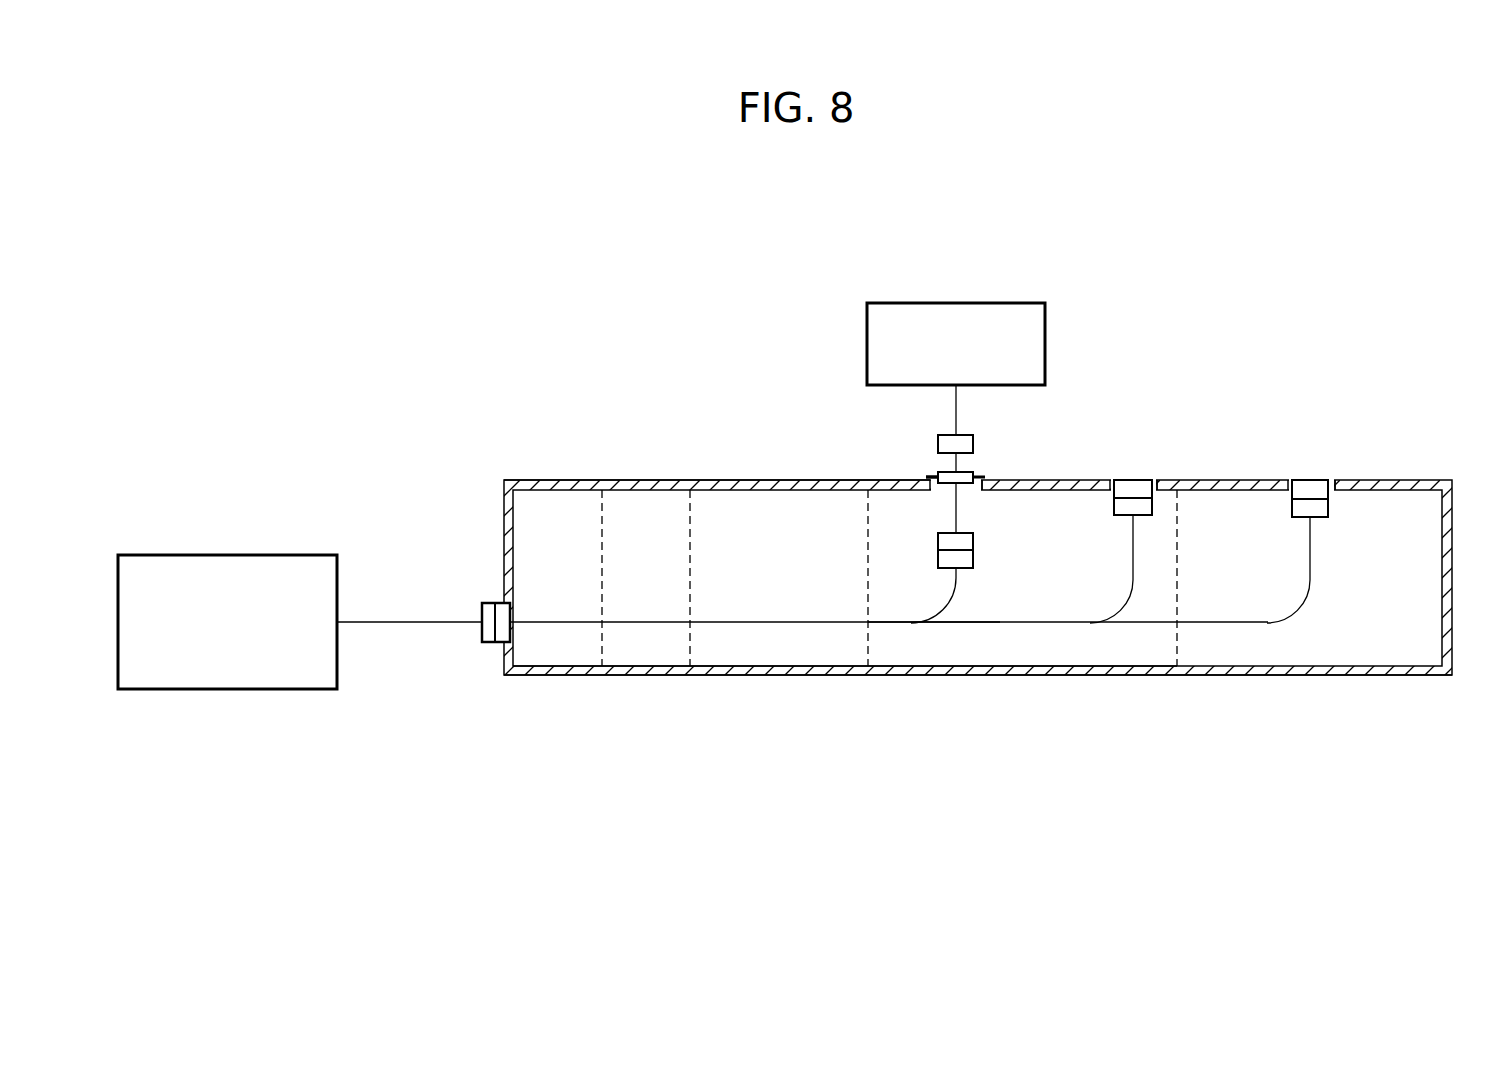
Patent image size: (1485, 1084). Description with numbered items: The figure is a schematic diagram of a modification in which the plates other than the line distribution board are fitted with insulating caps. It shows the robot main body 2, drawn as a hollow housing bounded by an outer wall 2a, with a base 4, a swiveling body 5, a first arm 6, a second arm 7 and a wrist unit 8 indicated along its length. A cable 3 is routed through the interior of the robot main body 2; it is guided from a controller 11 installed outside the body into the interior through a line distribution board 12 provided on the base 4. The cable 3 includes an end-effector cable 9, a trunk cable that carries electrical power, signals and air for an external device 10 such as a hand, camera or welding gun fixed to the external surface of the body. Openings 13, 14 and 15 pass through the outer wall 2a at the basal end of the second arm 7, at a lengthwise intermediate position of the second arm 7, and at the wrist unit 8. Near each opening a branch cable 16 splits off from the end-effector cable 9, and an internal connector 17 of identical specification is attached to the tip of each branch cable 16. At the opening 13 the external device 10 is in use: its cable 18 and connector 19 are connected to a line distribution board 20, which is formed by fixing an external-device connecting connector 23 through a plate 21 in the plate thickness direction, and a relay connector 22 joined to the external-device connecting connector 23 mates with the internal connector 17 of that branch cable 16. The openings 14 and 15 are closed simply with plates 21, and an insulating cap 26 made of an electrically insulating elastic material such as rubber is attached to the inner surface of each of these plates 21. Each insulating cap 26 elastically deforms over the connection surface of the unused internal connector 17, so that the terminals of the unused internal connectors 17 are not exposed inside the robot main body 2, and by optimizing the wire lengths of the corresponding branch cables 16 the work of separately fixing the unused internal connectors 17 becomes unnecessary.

The robot main body 2 is at (573, 463).
The outer wall 2a is at (757, 480).
The cable 3 is at (900, 622).
The base 4 is at (560, 675).
The swiveling body 5 is at (647, 675).
The first arm 6 is at (770, 675).
The second arm 7 is at (1021, 675).
The wrist unit 8 is at (1308, 677).
The end-effector cable 9 is at (835, 623).
The external device 10 is at (948, 303).
The controller 11 is at (213, 555).
The line distribution board 12 is at (500, 603).
The opening 13 is at (973, 491).
The opening 14 is at (1158, 491).
The opening 15 is at (1334, 491).
The branch cable 16 is at (958, 604).
The internal connector 17 is at (974, 565).
The cable of the external device 18 is at (955, 407).
The connector 19 is at (974, 441).
The line distribution board 20 is at (928, 478).
The plate 21 is at (986, 474).
The relay connector 22 is at (974, 545).
The external-device connecting connector 23 is at (940, 485).
The insulating cap 26 is at (1125, 506).